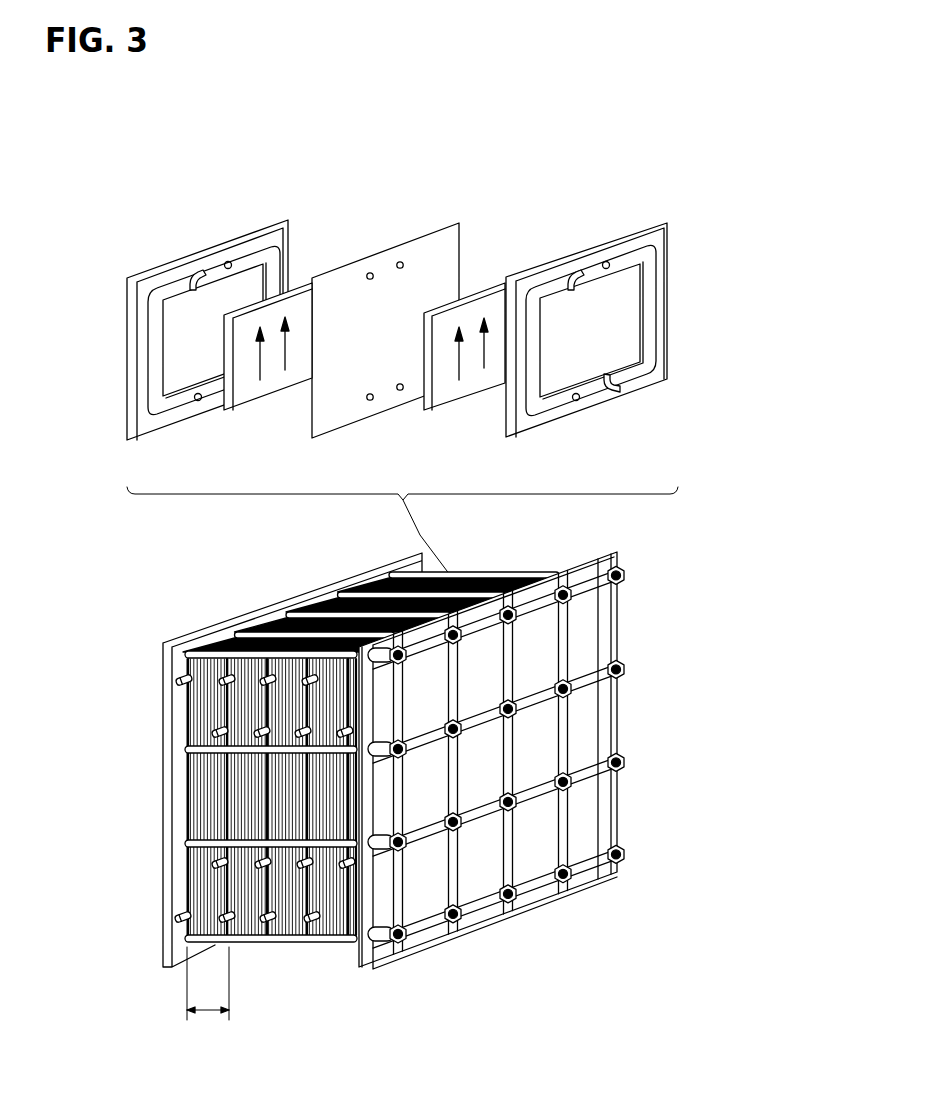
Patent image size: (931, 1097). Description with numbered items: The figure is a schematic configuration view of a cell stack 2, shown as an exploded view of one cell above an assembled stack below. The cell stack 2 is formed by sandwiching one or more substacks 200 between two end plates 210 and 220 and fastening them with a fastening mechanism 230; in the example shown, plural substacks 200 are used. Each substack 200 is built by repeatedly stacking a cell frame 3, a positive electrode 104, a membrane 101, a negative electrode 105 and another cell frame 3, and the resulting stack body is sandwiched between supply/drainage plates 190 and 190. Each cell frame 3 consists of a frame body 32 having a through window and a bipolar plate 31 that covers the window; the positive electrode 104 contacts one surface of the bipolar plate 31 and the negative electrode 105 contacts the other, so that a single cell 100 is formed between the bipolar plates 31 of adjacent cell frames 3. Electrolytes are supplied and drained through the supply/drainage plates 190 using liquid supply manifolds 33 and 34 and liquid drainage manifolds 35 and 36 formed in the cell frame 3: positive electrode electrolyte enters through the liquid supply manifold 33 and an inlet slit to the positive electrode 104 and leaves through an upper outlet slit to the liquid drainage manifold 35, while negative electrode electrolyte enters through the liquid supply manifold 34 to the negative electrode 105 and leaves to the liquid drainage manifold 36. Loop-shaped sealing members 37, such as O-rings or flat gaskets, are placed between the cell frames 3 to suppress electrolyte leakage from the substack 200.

The cell stack 2 is at (386, 803).
The cell frame 3 is at (394, 325).
The bipolar plate 31 is at (185, 352).
The frame body 32 is at (132, 342).
The liquid supply manifold 33 is at (640, 392).
The liquid supply manifold 34 is at (197, 402).
The liquid drainage manifold 35 is at (196, 270).
The liquid drainage manifold 36 is at (228, 260).
The sealing member 37 is at (288, 244).
The cell 100 is at (358, 163).
The membrane 101 is at (412, 240).
The positive electrode 104 is at (283, 400).
The negative electrode 105 is at (452, 395).
The supply/drainage plate 190 is at (187, 893).
The substack 200 is at (207, 1005).
The end plate 210 is at (540, 823).
The end plate 220 is at (163, 652).
The fastening mechanism 230 is at (233, 625).